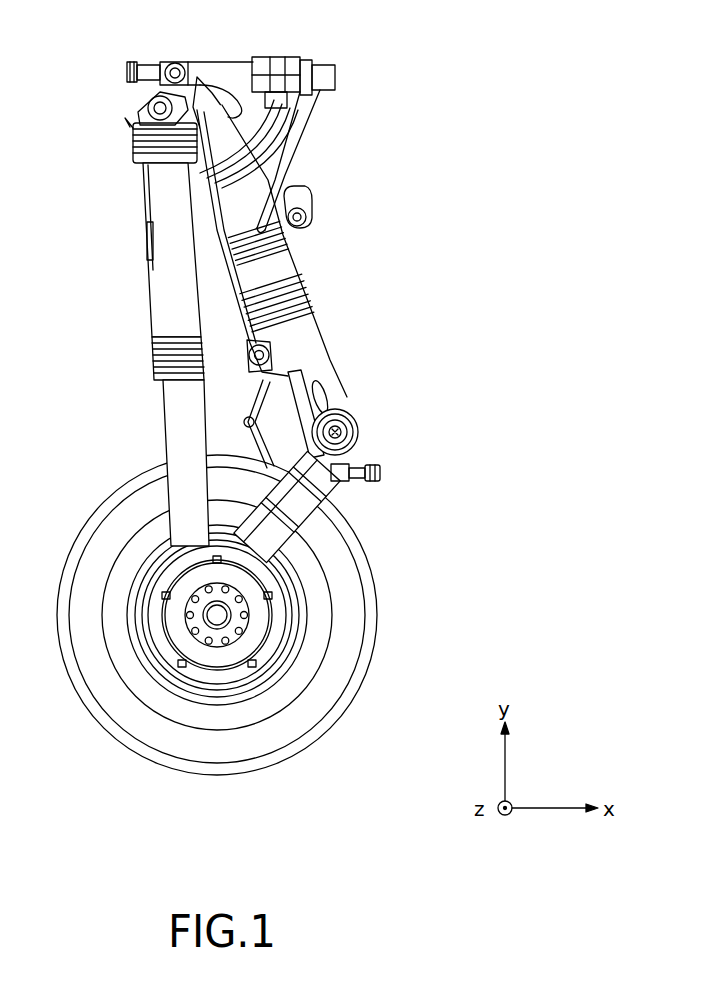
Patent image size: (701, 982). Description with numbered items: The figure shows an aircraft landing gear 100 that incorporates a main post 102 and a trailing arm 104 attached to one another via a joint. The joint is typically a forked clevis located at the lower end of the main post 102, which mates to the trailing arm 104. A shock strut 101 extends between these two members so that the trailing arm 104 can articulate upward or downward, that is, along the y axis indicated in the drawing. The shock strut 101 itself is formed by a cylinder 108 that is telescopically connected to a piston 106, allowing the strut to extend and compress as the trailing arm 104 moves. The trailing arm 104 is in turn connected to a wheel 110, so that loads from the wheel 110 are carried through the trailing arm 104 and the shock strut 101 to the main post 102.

The aircraft landing gear 100 is at (398, 72).
The shock strut 101 is at (148, 268).
The main post 102 is at (290, 277).
The trailing arm 104 is at (320, 499).
The piston 106 is at (170, 427).
The cylinder 108 is at (148, 183).
The wheel 110 is at (380, 610).